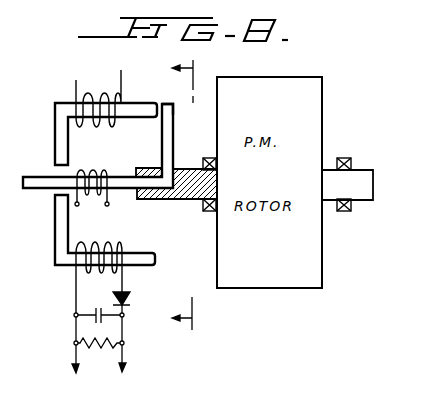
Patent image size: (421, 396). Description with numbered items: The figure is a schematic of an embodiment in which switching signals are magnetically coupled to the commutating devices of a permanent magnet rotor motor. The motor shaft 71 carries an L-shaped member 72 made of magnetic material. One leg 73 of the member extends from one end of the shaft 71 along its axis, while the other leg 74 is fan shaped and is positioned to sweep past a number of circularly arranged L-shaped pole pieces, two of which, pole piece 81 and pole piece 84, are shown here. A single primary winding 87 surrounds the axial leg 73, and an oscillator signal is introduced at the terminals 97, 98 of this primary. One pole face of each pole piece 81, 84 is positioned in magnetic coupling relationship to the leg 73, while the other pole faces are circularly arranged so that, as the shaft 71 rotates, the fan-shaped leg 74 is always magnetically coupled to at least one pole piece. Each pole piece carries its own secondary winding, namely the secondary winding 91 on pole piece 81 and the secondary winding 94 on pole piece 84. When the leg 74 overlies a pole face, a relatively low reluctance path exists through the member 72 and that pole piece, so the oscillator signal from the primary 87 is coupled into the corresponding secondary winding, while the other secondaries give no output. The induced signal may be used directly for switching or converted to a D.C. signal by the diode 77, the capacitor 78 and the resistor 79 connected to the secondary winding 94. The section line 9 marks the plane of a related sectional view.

The section line 9- 9 is at (174, 195).
The motor shaft 71 is at (365, 170).
The L-shaped member 72 is at (174, 136).
The leg 73 is at (132, 193).
The leg 74 is at (167, 103).
The diode 77 is at (130, 303).
The capacitor 78 is at (97, 325).
The resistor 79 is at (99, 352).
The L-shaped pole piece 81 is at (55, 138).
The L-shaped pole piece 84 is at (55, 248).
The primary winding 87 is at (94, 172).
The secondary winding 91 is at (76, 84).
The secondary winding 94 is at (112, 274).
The terminal 97 is at (77, 206).
The terminal 98 is at (107, 206).